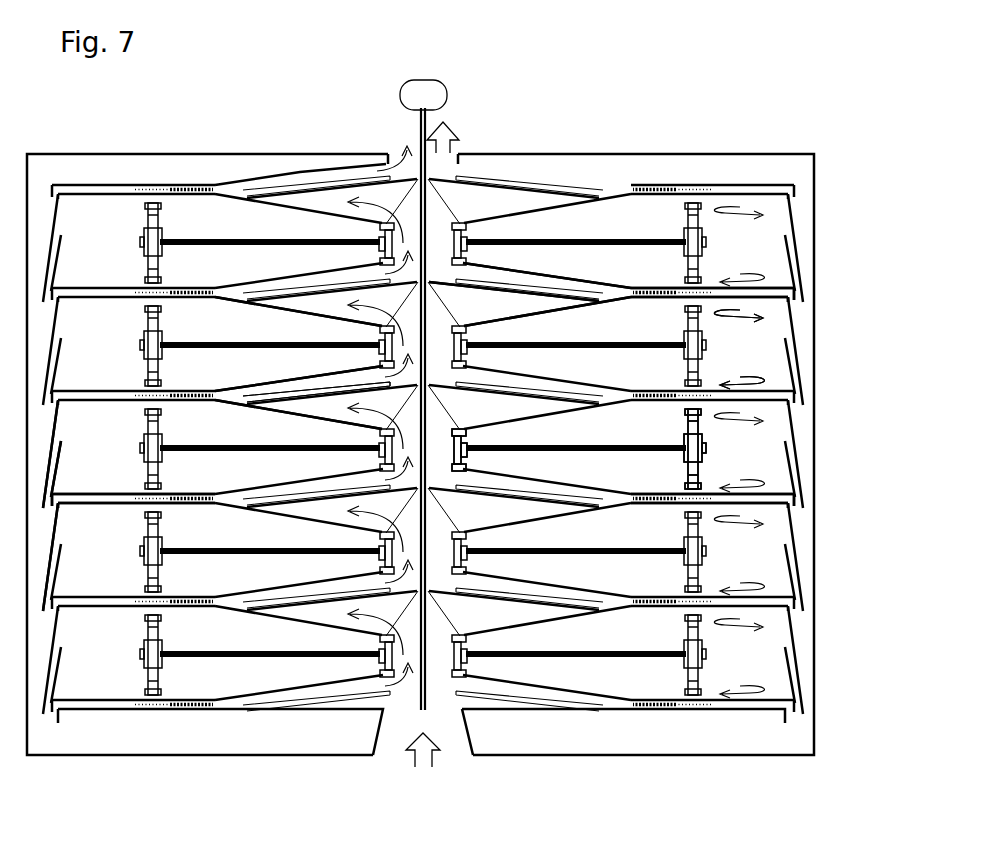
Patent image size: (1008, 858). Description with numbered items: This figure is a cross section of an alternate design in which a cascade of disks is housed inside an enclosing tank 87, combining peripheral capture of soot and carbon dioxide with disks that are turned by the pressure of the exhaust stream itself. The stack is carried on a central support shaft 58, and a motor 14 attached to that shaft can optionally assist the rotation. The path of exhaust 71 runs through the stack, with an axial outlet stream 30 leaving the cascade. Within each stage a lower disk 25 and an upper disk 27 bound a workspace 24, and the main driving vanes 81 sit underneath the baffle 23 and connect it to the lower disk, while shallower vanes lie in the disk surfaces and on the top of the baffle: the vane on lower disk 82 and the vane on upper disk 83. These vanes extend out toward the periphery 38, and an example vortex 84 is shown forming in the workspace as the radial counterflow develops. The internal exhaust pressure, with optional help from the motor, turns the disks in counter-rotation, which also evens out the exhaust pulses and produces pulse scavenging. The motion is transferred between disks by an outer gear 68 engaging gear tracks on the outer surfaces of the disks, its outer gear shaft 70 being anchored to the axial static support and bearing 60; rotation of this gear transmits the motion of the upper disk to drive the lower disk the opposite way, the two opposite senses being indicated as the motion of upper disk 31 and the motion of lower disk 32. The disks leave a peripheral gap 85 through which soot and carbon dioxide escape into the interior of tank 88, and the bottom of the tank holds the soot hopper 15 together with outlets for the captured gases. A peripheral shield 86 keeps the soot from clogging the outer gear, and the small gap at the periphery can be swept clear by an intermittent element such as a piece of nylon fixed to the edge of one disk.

The motor 14 is at (423, 95).
The soot hopper 15 is at (623, 732).
The baffle 23 is at (577, 300).
The workspace 24 is at (617, 293).
The lower disk 25 is at (530, 313).
The upper disk 27 is at (543, 275).
The axial outlet stream 30 is at (458, 135).
The motion of upper disk 31 is at (740, 382).
The motion of lower disk 32 is at (750, 321).
The periphery 38 is at (77, 497).
The central support shaft 58 is at (427, 693).
The thrust bearings and centering support structure for upper disk 60 is at (466, 463).
The outer gear 68 is at (697, 467).
The outer gear shaft 70 is at (562, 445).
The path of exhaust 71 is at (358, 320).
The driving vane underneath baffle 81 is at (313, 409).
The vane on lower disk 82 is at (295, 392).
The vane on upper disk 83 is at (332, 372).
The vortex 84 is at (652, 505).
The peripheral gap 85 is at (55, 492).
The peripheral shield 86 is at (57, 532).
The enclosing tank 87 is at (145, 756).
The interior of tank 88 is at (38, 435).